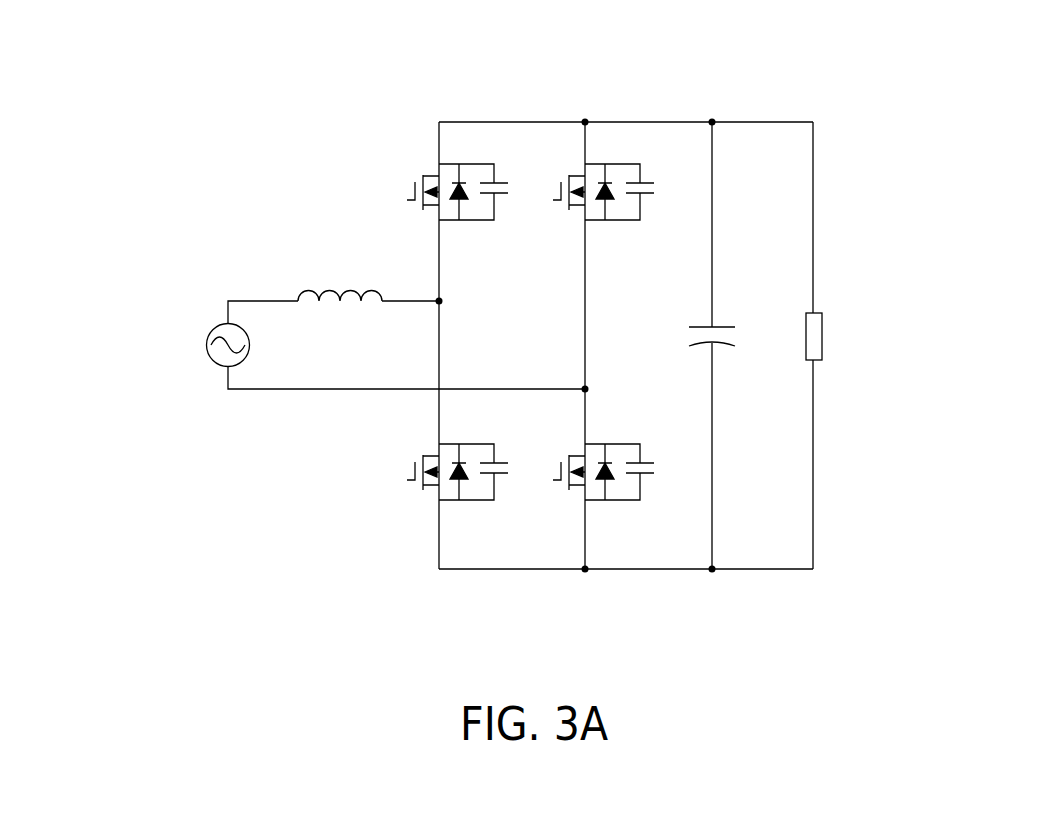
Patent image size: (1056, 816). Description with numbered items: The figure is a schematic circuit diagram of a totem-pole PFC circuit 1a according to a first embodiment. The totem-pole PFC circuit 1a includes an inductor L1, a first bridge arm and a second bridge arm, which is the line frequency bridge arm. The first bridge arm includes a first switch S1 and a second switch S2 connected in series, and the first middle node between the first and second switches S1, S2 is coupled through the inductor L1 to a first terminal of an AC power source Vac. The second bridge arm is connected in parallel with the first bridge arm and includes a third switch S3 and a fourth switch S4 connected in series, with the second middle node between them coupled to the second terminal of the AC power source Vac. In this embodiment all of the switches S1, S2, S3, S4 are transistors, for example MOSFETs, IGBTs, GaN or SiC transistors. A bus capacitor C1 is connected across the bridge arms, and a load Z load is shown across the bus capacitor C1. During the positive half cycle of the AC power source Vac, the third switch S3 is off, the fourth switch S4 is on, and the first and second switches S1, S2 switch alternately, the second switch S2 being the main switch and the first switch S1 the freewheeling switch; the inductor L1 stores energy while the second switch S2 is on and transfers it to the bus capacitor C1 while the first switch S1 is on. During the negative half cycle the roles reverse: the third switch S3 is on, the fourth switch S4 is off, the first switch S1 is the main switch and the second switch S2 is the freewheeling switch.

The totem-pole PFC circuit 1a is at (1024, 89).
The AC power source Vac is at (198, 345).
The inductor L1 is at (340, 276).
The first switch S1 is at (446, 187).
The second switch S2 is at (446, 481).
The third switch S3 is at (590, 187).
The fourth switch S4 is at (590, 481).
The bus capacitor C1 is at (692, 342).
The load impedance Z load is at (857, 336).